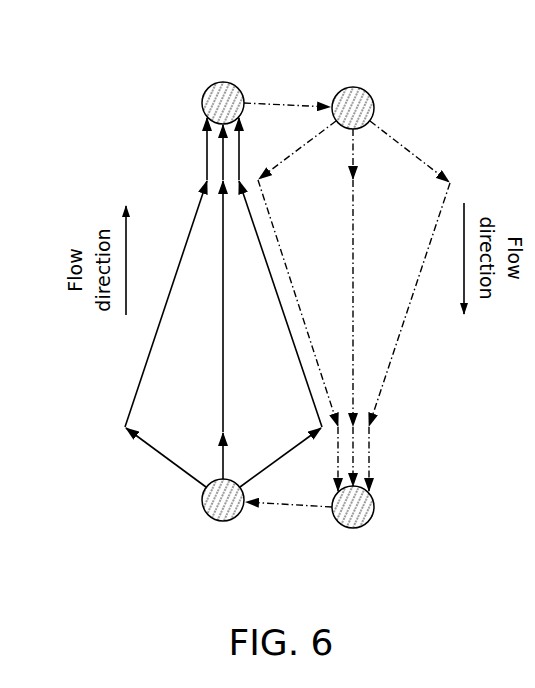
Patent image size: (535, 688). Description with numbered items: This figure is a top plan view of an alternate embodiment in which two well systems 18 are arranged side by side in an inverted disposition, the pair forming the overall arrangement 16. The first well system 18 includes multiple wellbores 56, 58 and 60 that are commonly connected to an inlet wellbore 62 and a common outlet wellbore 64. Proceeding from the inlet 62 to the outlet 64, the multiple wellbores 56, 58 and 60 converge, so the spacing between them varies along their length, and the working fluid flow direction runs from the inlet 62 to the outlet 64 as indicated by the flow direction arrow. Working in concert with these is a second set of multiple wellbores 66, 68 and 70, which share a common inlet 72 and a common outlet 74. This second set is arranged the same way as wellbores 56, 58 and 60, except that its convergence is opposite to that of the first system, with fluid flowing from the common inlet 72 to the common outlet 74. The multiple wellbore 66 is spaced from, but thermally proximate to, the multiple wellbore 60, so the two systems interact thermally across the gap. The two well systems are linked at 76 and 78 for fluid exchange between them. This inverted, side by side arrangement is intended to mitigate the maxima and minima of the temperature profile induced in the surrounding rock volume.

The first flow network 16 is at (108, 380).
The well system 18 is at (424, 112).
The multiple wellbore 56 is at (148, 352).
The multiple wellbore 58 is at (222, 313).
The multiple wellbore 60 is at (260, 246).
The inlet wellbore 62 is at (223, 522).
The common outlet wellbore 64 is at (223, 81).
The multiple wellbore 66 is at (278, 228).
The multiple wellbore 68 is at (355, 235).
The multiple wellbore 70 is at (392, 361).
The common inlet 72 is at (353, 86).
The common outlet 74 is at (353, 529).
The link 76 is at (276, 103).
The link 78 is at (298, 507).